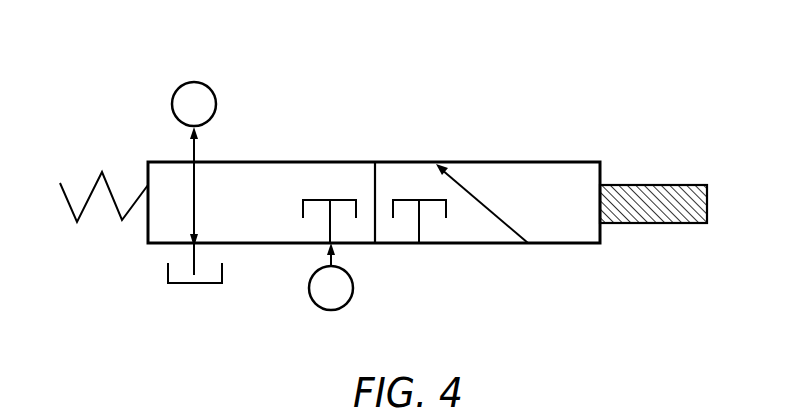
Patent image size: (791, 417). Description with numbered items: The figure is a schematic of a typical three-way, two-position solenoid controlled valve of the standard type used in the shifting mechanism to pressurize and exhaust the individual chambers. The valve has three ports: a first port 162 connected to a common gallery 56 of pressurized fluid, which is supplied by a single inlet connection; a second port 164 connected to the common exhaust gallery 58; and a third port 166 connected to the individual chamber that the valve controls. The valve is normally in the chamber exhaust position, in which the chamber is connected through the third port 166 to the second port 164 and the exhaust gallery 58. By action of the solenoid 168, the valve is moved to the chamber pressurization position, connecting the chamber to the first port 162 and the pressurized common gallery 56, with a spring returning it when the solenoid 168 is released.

The third port 166 is at (192, 162).
The second port 164 is at (188, 245).
The common exhaust gallery 58 is at (167, 272).
The first port 162 is at (335, 243).
The common gallery 56 is at (330, 310).
The solenoid 168 is at (653, 223).